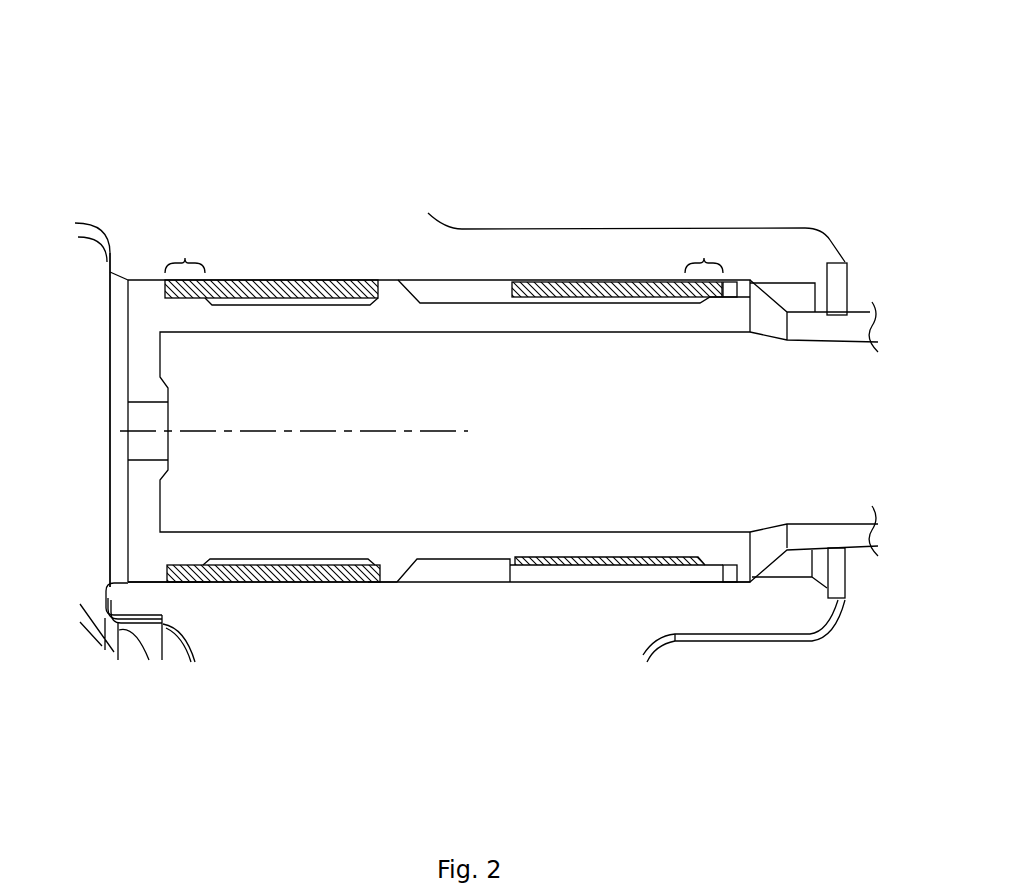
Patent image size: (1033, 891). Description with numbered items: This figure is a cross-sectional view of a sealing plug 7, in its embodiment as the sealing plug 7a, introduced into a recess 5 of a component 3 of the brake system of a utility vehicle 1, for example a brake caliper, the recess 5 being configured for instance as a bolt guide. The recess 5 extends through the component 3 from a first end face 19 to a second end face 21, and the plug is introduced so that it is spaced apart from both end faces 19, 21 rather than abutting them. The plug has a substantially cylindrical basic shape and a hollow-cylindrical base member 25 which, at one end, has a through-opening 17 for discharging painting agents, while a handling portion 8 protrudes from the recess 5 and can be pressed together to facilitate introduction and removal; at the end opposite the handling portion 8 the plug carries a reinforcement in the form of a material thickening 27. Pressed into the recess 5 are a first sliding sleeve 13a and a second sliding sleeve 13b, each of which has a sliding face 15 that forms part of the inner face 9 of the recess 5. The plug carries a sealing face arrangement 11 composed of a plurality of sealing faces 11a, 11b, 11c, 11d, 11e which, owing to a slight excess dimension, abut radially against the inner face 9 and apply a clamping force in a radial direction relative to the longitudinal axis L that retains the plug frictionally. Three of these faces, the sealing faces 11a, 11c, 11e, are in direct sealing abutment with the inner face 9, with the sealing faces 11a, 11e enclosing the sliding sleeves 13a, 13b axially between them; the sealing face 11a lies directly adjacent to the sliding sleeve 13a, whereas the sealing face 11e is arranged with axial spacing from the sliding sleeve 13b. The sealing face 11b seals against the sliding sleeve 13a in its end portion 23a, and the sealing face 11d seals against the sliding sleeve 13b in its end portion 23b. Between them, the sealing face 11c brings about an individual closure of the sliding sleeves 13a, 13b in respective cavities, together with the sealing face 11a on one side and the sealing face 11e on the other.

The utility vehicle 1 is at (285, 84).
The component 3 is at (465, 250).
The recess 5 is at (95, 355).
The sealing plug 7 is at (886, 423).
The sealing plug 7a is at (858, 312).
The handling portion 8 is at (880, 327).
The inner face 9 is at (419, 278).
The sealing face arrangement 11 is at (439, 706).
The sealing face 11a is at (163, 586).
The sealing face 11b is at (194, 586).
The sealing face 11c is at (380, 586).
The sealing face 11d is at (704, 579).
The sealing face 11e is at (739, 588).
The first sliding sleeve 13a is at (240, 282).
The second sliding sleeve 13b is at (560, 282).
The sliding face 15 is at (306, 305).
The through-opening 17 is at (143, 459).
The first end face 19 is at (855, 277).
The second end face 21 is at (101, 296).
The end portion 23a is at (187, 251).
The end portion 23b is at (703, 252).
The hollow-cylindrical base member 25 is at (232, 544).
The material thickening 27 is at (158, 316).
The longitudinal axis L is at (432, 431).